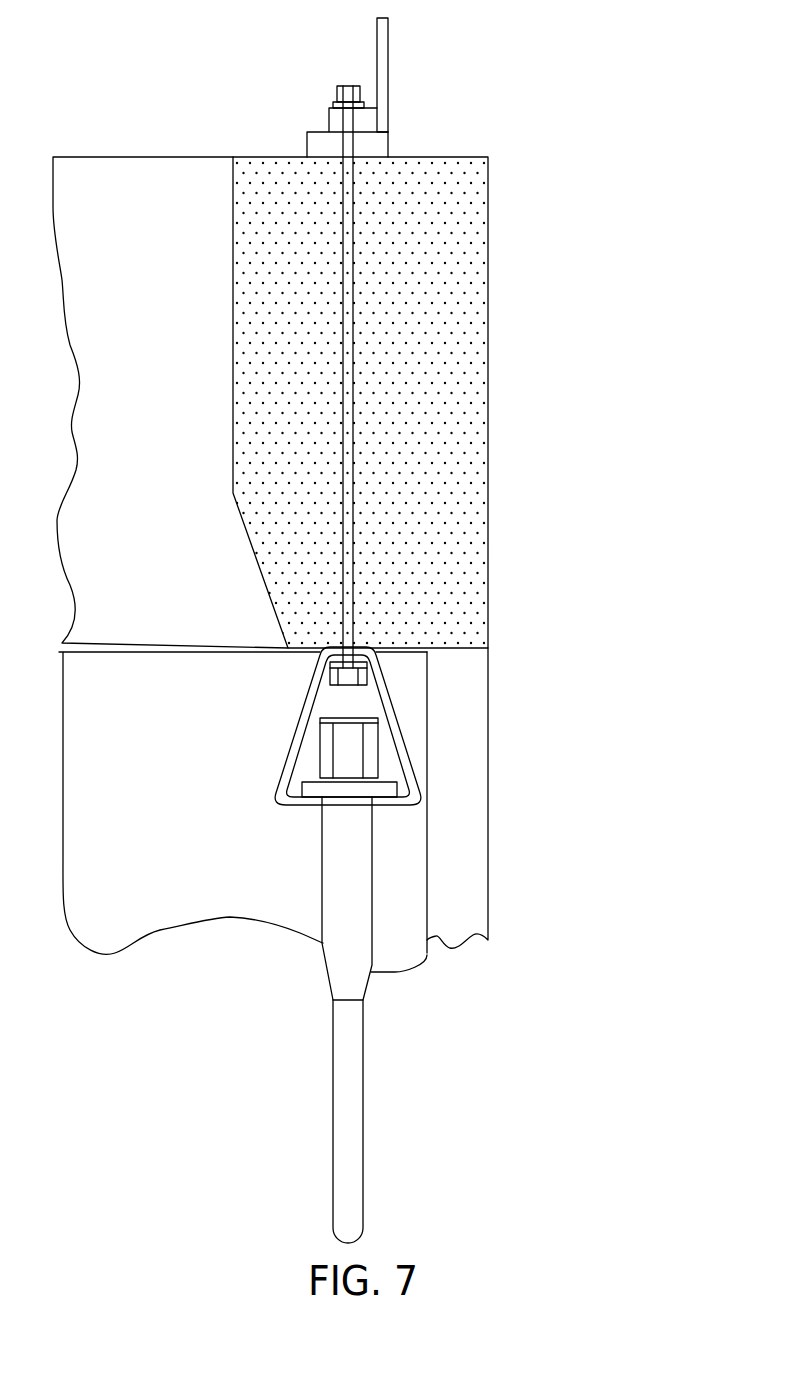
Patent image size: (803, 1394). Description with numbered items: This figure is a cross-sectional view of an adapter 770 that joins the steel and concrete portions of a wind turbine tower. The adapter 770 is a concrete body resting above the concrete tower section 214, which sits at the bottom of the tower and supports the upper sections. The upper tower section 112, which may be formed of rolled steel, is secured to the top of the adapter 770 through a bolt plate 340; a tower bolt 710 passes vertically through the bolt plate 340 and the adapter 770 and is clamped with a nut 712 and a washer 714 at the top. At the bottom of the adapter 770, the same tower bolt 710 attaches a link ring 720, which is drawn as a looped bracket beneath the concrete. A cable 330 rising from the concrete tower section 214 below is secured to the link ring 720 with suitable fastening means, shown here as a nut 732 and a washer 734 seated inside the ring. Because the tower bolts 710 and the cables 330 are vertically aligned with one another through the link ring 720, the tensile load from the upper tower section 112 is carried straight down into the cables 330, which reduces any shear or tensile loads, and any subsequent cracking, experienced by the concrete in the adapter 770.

The tower section 112 is at (385, 50).
The nut 712 is at (362, 104).
The washer 714 is at (333, 100).
The bolt plate 340 is at (317, 150).
The tower bolt 710 is at (353, 225).
The adapter 770 is at (488, 357).
The link ring 720 is at (302, 712).
The nut 732 is at (373, 742).
The washer 734 is at (320, 790).
The concrete tower section 214 is at (475, 870).
The cable 330 is at (343, 1088).